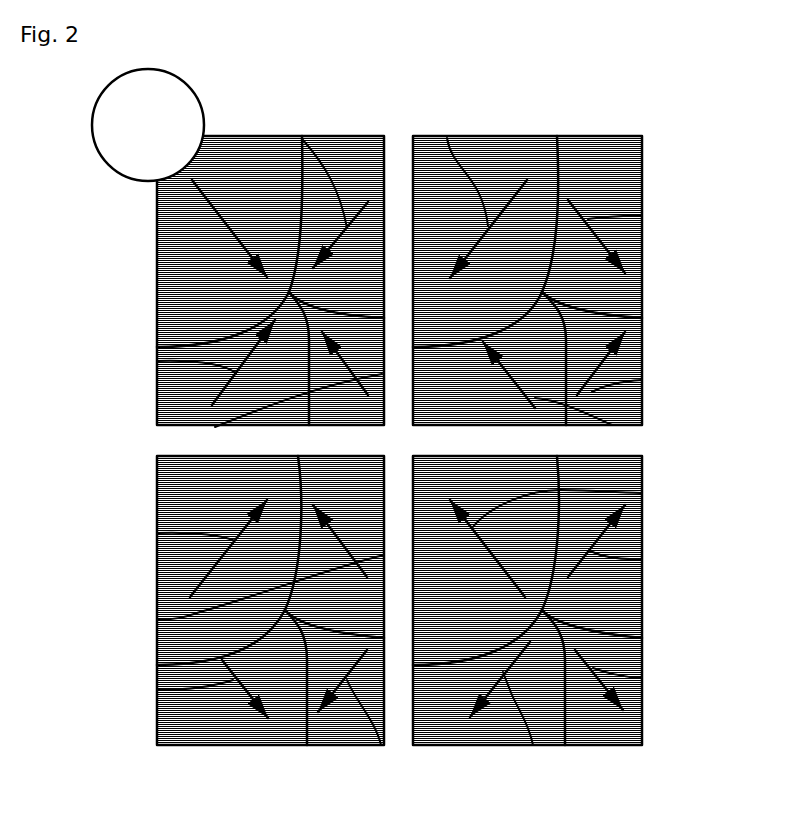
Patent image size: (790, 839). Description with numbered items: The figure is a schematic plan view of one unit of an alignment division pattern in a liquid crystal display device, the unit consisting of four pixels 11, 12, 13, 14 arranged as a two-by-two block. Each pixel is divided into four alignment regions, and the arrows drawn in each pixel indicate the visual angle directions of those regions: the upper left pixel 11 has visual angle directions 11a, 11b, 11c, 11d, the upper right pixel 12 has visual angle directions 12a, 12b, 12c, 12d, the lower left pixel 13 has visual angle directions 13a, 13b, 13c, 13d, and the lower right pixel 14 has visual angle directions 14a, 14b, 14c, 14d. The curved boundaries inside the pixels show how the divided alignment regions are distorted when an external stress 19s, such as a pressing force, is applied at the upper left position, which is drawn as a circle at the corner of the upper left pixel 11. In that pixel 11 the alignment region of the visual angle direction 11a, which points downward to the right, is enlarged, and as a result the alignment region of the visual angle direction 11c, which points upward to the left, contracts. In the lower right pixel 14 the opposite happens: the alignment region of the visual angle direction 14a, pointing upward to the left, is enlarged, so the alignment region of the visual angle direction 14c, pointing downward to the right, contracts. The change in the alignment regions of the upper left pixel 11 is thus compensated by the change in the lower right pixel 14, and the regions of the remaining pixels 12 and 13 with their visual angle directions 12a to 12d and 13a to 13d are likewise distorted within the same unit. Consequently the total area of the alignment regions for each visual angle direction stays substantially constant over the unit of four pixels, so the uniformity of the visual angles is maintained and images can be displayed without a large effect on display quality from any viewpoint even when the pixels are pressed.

The pixel 11 is at (157, 290).
The visual angle direction 11a is at (230, 231).
The visual angle direction 11b is at (303, 140).
The visual angle direction 11c is at (215, 427).
The visual angle direction 11d is at (157, 361).
The pixel 12 is at (643, 296).
The visual angle direction 12a is at (447, 138).
The visual angle direction 12b is at (642, 215).
The visual angle direction 12c is at (642, 380).
The visual angle direction 12d is at (612, 425).
The pixel 13 is at (157, 735).
The visual angle direction 13a is at (157, 533).
The visual angle direction 13b is at (157, 620).
The visual angle direction 13c is at (381, 745).
The visual angle direction 13d is at (157, 690).
The pixel 14 is at (642, 620).
The visual angle direction 14a is at (642, 493).
The visual angle direction 14b is at (642, 559).
The visual angle direction 14c is at (642, 678).
The visual angle direction 14d is at (533, 745).
The external stress 19s is at (112, 155).